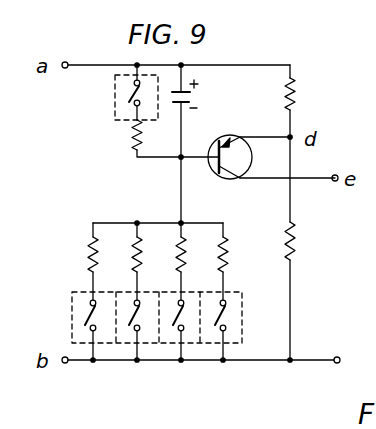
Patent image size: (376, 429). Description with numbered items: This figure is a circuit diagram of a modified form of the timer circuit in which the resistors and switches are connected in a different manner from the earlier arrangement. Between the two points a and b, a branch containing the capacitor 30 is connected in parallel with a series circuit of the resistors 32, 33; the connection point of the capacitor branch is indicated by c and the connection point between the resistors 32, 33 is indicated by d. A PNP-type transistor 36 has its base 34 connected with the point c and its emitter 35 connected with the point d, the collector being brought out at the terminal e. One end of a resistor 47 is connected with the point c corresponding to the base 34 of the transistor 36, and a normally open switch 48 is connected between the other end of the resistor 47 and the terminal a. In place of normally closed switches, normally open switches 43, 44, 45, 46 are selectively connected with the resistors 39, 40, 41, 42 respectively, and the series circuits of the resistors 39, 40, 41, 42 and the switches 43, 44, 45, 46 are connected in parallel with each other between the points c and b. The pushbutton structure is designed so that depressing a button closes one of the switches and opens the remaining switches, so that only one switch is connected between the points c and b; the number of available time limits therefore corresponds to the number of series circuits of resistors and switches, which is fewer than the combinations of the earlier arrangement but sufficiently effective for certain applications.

The capacitor 30 is at (190, 96).
The resistor 32 is at (292, 80).
The resistor 33 is at (294, 240).
The base 34 is at (215, 152).
The emitter 35 is at (241, 136).
The PNP-type transistor 36 is at (226, 176).
The resistor 39 is at (88, 250).
The resistor 40 is at (132, 263).
The resistor 41 is at (177, 255).
The resistor 42 is at (220, 263).
The normally open switch 43 is at (85, 332).
The normally open switch 44 is at (130, 332).
The normally open switch 45 is at (174, 332).
The normally open switch 46 is at (216, 332).
The resistor 47 is at (133, 136).
The normally open switch 48 is at (114, 86).